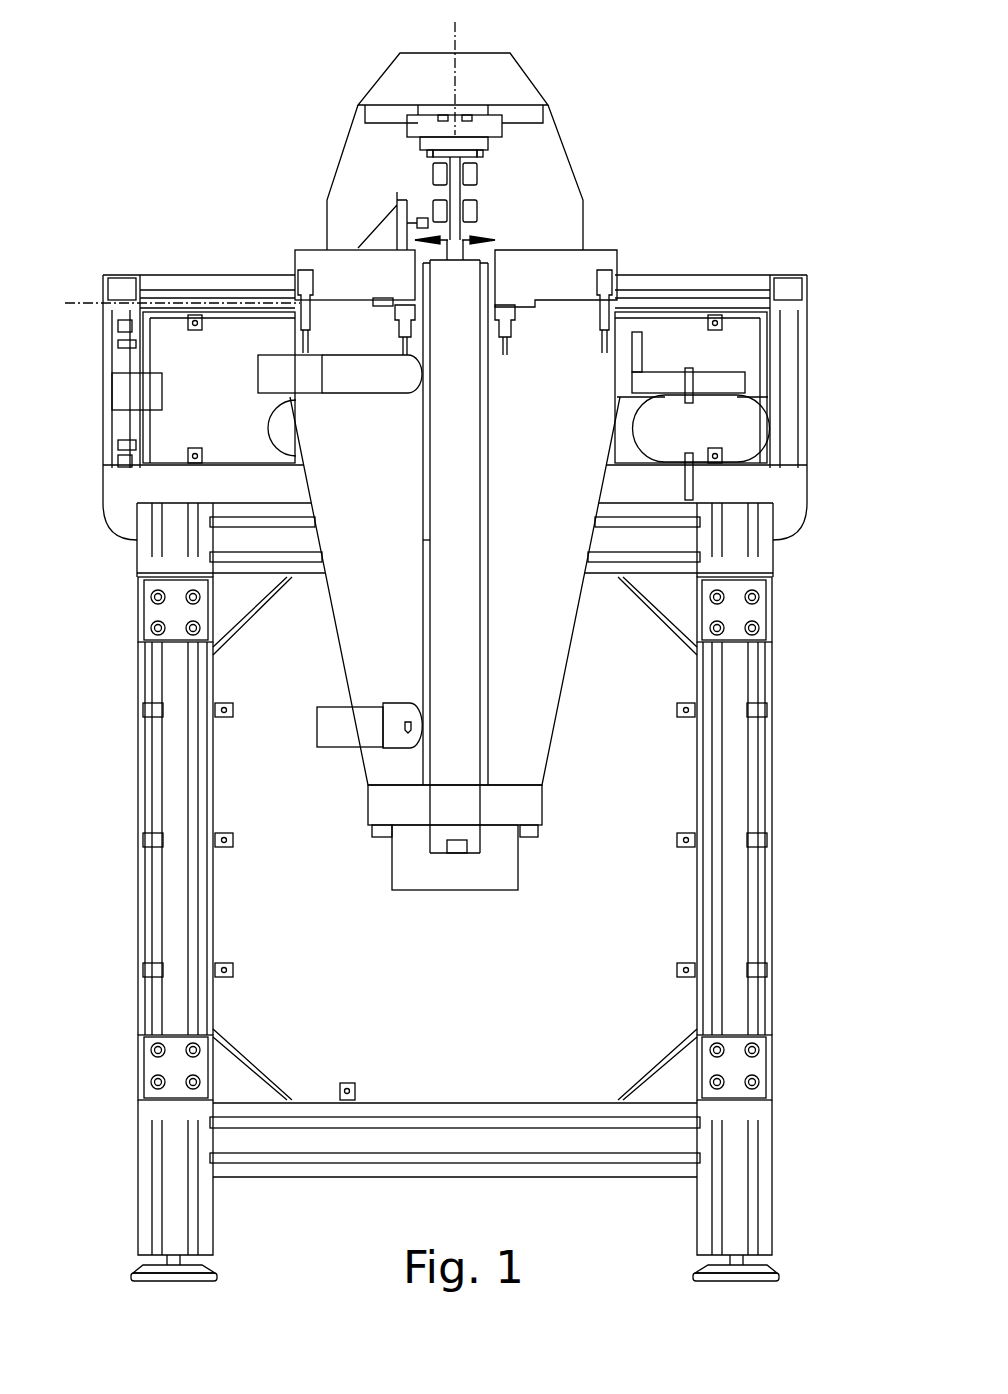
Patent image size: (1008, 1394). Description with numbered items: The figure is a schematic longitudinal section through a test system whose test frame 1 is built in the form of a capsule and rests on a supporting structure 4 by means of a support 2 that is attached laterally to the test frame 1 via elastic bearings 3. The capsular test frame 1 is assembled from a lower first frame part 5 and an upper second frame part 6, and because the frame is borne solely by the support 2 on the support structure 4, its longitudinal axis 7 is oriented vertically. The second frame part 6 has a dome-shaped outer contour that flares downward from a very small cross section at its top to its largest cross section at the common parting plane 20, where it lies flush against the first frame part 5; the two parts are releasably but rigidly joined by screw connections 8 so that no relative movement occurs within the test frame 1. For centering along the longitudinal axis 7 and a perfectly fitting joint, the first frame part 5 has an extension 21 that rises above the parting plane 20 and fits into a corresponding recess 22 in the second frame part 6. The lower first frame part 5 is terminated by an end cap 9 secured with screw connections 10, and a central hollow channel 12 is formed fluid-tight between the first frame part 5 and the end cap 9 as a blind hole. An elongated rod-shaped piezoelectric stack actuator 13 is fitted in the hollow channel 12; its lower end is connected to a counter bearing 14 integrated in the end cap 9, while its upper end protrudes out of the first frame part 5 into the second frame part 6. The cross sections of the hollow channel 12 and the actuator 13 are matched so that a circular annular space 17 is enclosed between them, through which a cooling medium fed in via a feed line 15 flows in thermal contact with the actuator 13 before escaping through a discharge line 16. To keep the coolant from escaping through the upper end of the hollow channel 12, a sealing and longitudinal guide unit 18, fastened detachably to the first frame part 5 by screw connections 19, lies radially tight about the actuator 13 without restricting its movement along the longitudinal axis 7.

The test frame 1 is at (263, 173).
The support 2 is at (728, 380).
The elastic bearings 3 is at (748, 428).
The supporting structure 4 is at (752, 768).
The first frame part 5 is at (553, 492).
The second frame part 6 is at (503, 82).
The longitudinal axis 7 is at (457, 37).
The screw connections 8 is at (305, 285).
The end cap 9 is at (487, 875).
The screw connections 10 is at (527, 832).
The hollow channel 12 is at (483, 652).
The actuator 13 is at (465, 597).
The counter bearing 14 is at (458, 845).
The feed line 15 is at (340, 730).
The discharge line 16 is at (257, 373).
The annular space 17 is at (483, 540).
The sealing and longitudinal guide unit 18 is at (485, 305).
The screw connections 19 is at (397, 317).
The parting plane 20 is at (82, 302).
The extension 21 is at (397, 312).
The recess 22 is at (383, 296).